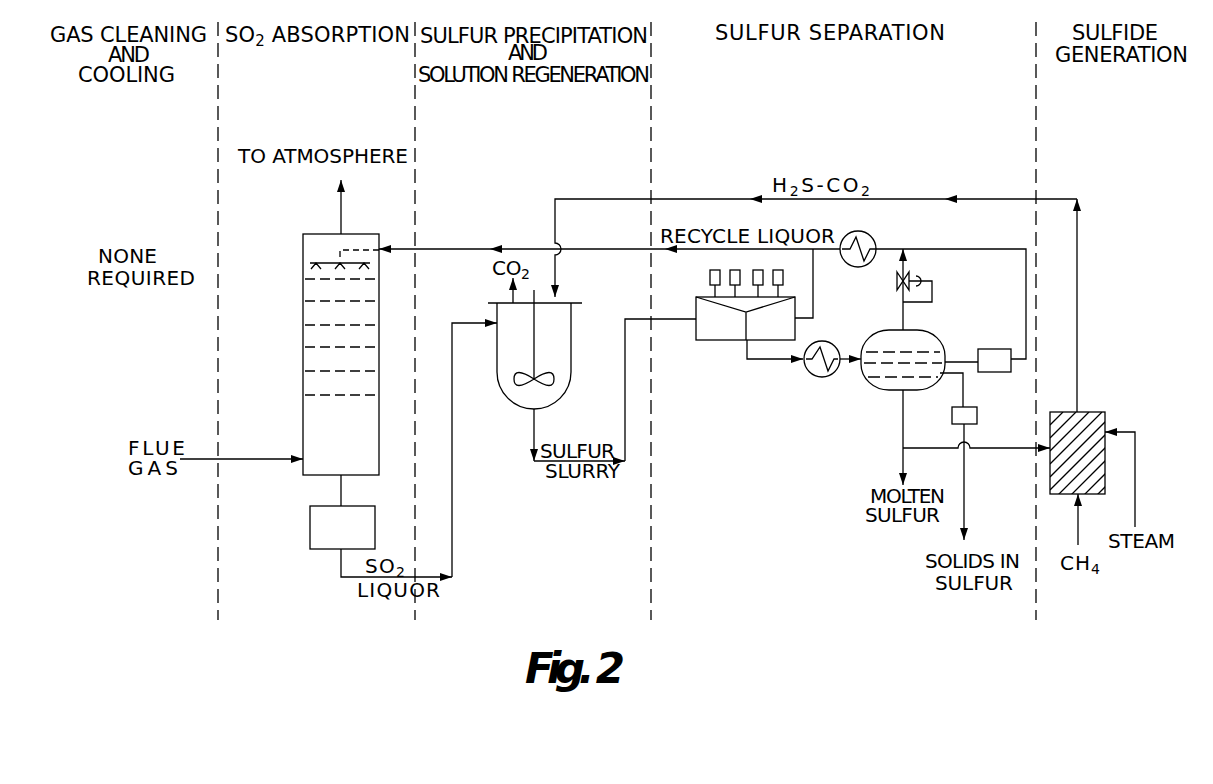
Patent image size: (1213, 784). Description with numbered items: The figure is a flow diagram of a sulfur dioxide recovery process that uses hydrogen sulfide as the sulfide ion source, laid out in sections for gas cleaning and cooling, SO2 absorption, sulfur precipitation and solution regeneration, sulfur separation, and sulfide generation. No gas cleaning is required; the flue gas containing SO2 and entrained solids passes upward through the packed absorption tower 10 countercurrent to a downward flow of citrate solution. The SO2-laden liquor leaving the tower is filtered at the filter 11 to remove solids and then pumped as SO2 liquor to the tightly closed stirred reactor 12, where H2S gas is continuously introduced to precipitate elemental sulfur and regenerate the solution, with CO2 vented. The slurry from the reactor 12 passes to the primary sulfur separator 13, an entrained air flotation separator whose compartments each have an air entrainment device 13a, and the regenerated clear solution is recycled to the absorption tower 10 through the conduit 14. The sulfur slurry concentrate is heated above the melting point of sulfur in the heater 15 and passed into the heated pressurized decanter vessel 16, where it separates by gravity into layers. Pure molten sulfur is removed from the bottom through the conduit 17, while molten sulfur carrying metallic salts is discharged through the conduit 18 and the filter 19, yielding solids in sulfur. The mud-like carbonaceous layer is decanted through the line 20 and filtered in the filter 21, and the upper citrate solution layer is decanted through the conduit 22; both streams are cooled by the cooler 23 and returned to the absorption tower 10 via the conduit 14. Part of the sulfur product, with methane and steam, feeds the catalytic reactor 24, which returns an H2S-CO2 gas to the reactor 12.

The packed absorption tower 10 is at (303, 338).
The filter 11 is at (310, 525).
The stirred reactor 12 is at (500, 385).
The primary sulfur separator 13 is at (720, 340).
The air entrainment device 13a is at (777, 270).
The conduit 14 is at (441, 249).
The heater 15 is at (822, 377).
The decanter vessel 16 is at (880, 392).
The conduit 17 is at (900, 455).
The conduit 18 is at (963, 385).
The filter 19 is at (978, 416).
The line 20 is at (965, 360).
The filter 21 is at (995, 349).
The conduit 22 is at (903, 305).
The cooler 23 is at (876, 238).
The catalytic reactor 24 is at (1090, 412).